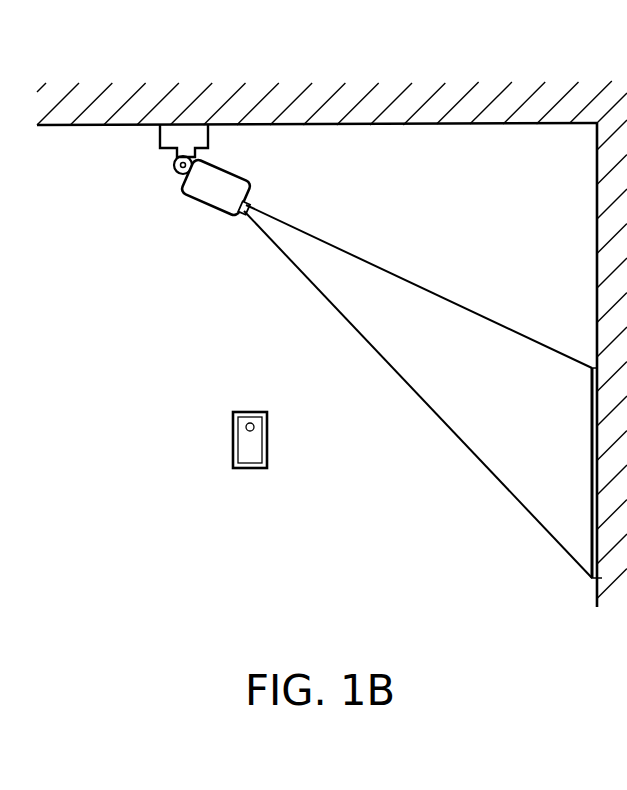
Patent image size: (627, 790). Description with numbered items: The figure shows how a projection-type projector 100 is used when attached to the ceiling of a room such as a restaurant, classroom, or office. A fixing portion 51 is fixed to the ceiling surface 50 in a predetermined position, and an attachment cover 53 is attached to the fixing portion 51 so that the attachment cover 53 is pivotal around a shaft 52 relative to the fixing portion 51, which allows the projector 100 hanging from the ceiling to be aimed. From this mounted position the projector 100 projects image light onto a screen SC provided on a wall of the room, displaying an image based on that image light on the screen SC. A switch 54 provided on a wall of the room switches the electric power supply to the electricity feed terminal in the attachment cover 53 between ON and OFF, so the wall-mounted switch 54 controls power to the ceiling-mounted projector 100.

The ceiling surface 50 is at (352, 128).
The fixing portion 51 is at (160, 138).
The shaft 52 is at (180, 166).
The attachment cover 53 is at (240, 167).
The projector 100 is at (233, 215).
The switch 54 is at (245, 410).
The screen SC is at (592, 485).